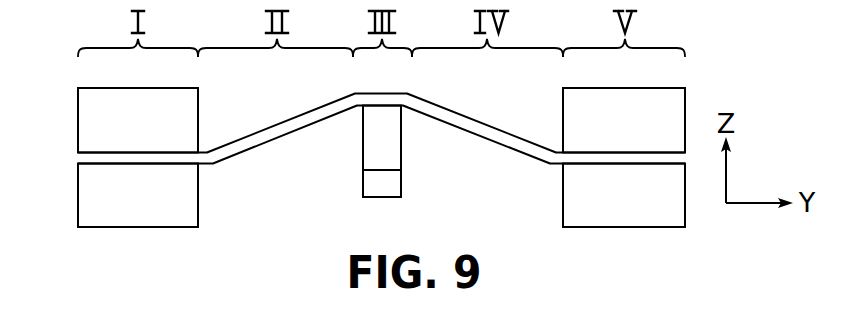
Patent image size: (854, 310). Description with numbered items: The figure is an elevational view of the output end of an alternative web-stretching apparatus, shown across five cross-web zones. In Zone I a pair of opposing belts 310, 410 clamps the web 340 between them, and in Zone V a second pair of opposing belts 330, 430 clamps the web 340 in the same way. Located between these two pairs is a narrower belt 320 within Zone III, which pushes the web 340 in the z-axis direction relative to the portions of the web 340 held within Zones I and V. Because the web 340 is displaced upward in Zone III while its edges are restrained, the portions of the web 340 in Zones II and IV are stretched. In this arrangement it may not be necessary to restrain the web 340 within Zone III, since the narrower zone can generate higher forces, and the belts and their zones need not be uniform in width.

The opposing belt 310 is at (78, 198).
The narrower belt 320 is at (363, 153).
The opposing belt 330 is at (563, 196).
The web 340 is at (82, 156).
The opposing belt 410 is at (78, 116).
The opposing belt 430 is at (563, 116).